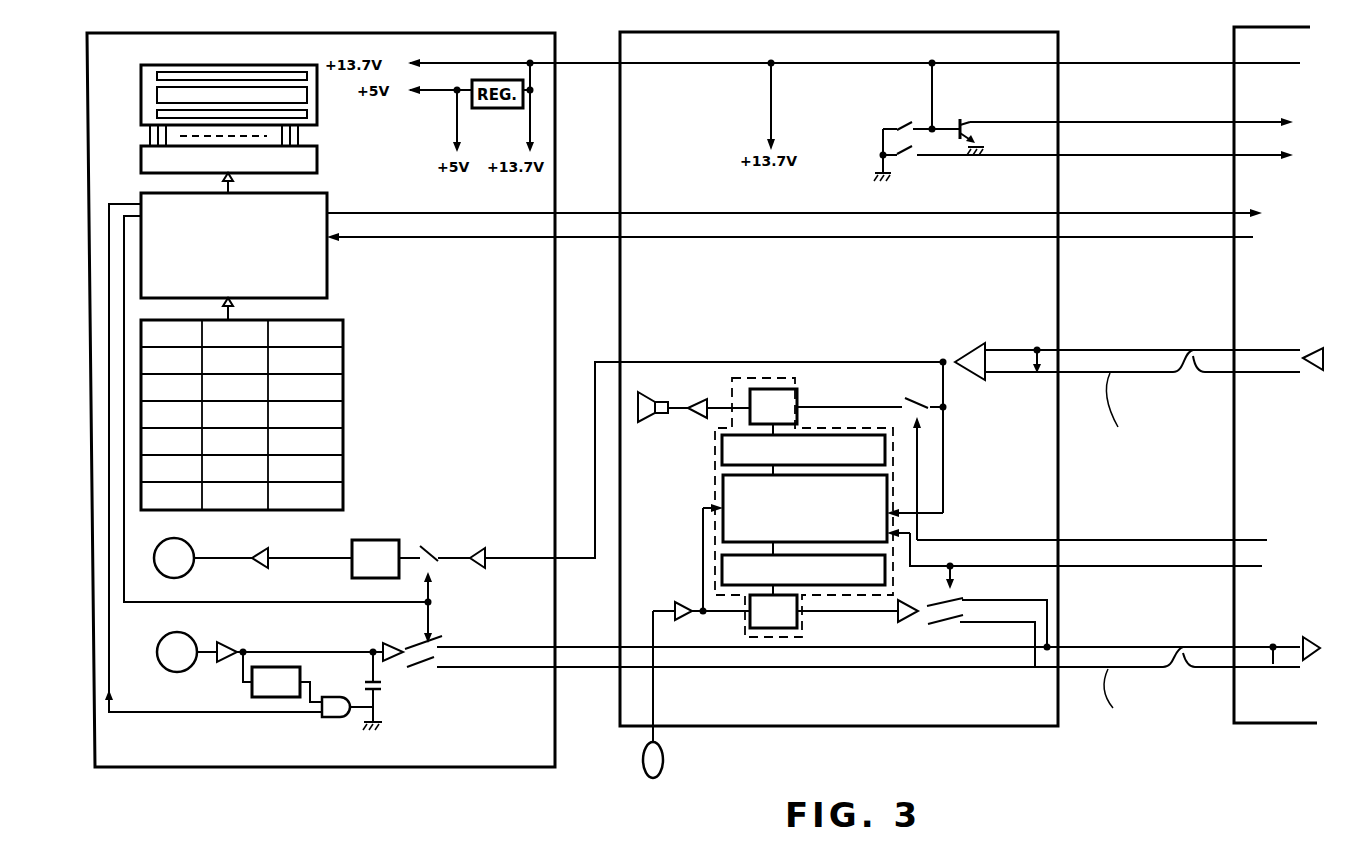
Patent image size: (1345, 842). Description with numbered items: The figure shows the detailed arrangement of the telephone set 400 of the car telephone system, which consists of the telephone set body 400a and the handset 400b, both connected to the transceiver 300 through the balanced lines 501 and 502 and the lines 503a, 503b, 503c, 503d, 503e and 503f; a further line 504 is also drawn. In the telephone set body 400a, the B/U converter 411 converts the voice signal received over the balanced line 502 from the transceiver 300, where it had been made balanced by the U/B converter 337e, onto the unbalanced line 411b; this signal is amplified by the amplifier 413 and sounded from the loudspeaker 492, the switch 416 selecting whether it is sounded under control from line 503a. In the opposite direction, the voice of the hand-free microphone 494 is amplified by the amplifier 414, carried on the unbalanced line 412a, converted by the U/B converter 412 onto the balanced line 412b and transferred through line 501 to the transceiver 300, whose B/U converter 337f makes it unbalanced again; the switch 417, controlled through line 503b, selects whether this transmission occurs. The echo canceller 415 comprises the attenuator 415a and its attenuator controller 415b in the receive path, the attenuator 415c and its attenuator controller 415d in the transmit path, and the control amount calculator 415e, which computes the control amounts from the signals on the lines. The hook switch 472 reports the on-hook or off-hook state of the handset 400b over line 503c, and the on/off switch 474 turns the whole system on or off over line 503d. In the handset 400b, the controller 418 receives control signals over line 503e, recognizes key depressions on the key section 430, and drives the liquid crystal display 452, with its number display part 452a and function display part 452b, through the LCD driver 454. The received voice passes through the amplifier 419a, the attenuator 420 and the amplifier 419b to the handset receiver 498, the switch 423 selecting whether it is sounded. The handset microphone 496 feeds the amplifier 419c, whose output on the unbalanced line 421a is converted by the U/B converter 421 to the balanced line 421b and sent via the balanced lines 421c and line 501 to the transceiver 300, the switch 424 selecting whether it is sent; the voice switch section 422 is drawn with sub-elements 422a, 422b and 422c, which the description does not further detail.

The transceiver 300 is at (1277, 723).
The U/B converter 337e is at (1317, 349).
The B/U converter 337f is at (1307, 643).
The telephone set 400 is at (302, 30).
The telephone set body 400a is at (1113, 782).
The handset 400b is at (585, 820).
The B/U converter 411 is at (975, 345).
The unbalanced line 411b is at (883, 362).
The U/B converter 412 is at (907, 623).
The unbalanced line 412a is at (838, 613).
The balanced line 412b is at (955, 626).
The amplifier 413 is at (700, 398).
The amplifier 414 is at (688, 618).
The echo canceller 415 is at (840, 534).
The attenuator 415a is at (792, 402).
The attenuator controller 415b is at (722, 452).
The attenuator 415c is at (786, 638).
The attenuator controller 415d is at (722, 566).
The control amount calculator 415e is at (723, 489).
The switch 416 is at (930, 401).
The switch 417 is at (960, 592).
The controller 418 is at (327, 277).
The amplifier 419a is at (492, 543).
The amplifier 419b is at (270, 552).
The amplifier 419c is at (232, 645).
The attenuator 420 is at (386, 540).
The U/B converter 421 is at (405, 668).
The unbalanced line 421a is at (319, 650).
The balanced line 421b is at (503, 662).
The balanced lines 421c is at (710, 668).
The voice switch section 422 is at (350, 728).
The detector 422a is at (272, 699).
The AND gate 422b is at (331, 718).
The capacitor 422c is at (378, 708).
The switch 423 is at (428, 546).
The switch 424 is at (440, 669).
The key section 430 is at (343, 397).
The liquid crystal display 452 is at (253, 93).
The number display part 452a is at (260, 92).
The display part 452b is at (172, 73).
The LCD driver 454 is at (317, 157).
The hook switch 472 is at (895, 126).
The on/off switch 474 is at (908, 157).
The loudspeaker 492 is at (650, 394).
The hand-free microphone 494 is at (664, 757).
The handset microphone 496 is at (180, 672).
The handset receiver 498 is at (194, 550).
The balanced line 501 is at (1130, 669).
The balanced line 502 is at (1147, 374).
The line 503a is at (1142, 538).
The line 503b is at (1167, 567).
The line 503c is at (1167, 120).
The line 503d is at (1143, 153).
The line 503e is at (1145, 212).
The line 503f is at (1142, 238).
The CU power line 504 is at (1087, 64).